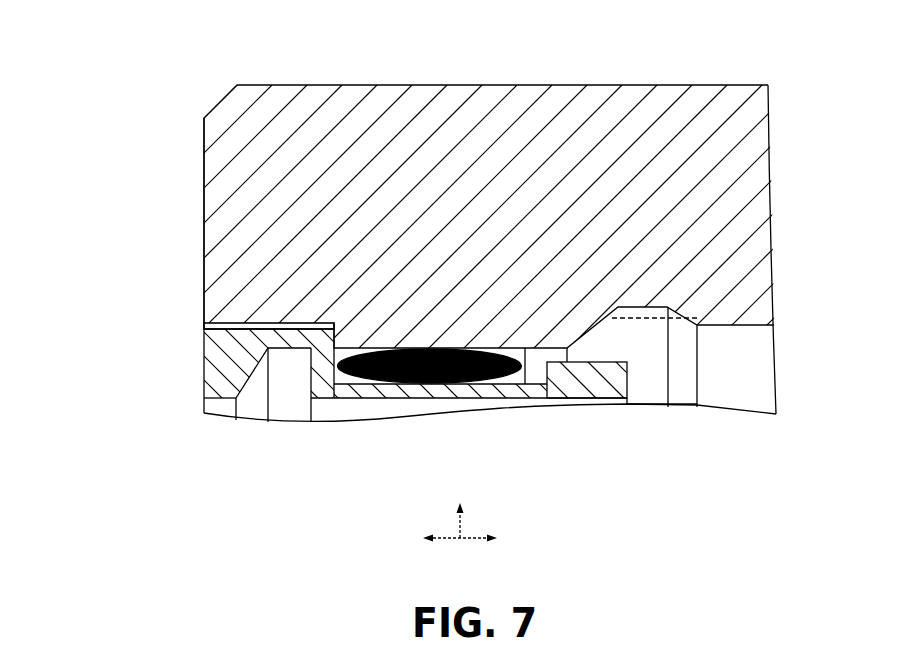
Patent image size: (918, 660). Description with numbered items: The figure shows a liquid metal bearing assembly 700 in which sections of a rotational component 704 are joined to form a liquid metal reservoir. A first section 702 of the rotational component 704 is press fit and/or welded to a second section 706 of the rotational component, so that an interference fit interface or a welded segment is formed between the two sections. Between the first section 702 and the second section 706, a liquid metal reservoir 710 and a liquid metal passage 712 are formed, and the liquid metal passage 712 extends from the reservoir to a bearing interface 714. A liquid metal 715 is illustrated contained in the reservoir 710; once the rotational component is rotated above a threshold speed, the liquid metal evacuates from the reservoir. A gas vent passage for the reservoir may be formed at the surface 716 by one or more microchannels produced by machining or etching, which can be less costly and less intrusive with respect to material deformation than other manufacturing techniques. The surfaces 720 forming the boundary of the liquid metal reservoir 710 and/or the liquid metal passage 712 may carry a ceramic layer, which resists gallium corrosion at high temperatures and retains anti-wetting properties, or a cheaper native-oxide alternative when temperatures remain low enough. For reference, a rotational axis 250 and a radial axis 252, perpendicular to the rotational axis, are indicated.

The liquid metal bearing assembly 700 is at (114, 54).
The first section 702 is at (192, 203).
The rotational component 704 is at (66, 211).
The second section 706 is at (176, 360).
The liquid metal reservoir 710 is at (342, 394).
The liquid metal passage 712 is at (582, 348).
The bearing interface 714 is at (639, 352).
The liquid metal 715 is at (446, 375).
The surface 716 is at (217, 328).
The surfaces 720 is at (526, 382).
The rotational axis 250 is at (483, 540).
The radial axis 252 is at (466, 523).